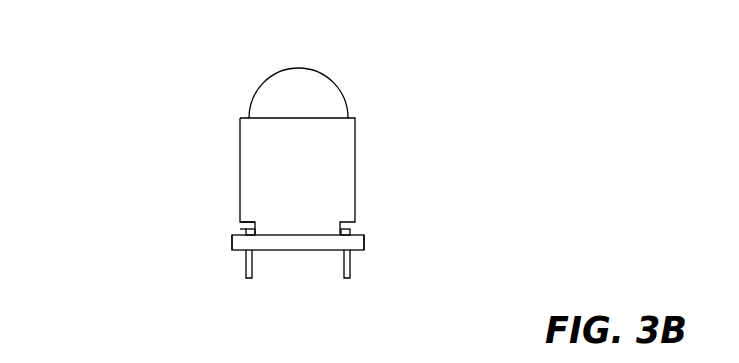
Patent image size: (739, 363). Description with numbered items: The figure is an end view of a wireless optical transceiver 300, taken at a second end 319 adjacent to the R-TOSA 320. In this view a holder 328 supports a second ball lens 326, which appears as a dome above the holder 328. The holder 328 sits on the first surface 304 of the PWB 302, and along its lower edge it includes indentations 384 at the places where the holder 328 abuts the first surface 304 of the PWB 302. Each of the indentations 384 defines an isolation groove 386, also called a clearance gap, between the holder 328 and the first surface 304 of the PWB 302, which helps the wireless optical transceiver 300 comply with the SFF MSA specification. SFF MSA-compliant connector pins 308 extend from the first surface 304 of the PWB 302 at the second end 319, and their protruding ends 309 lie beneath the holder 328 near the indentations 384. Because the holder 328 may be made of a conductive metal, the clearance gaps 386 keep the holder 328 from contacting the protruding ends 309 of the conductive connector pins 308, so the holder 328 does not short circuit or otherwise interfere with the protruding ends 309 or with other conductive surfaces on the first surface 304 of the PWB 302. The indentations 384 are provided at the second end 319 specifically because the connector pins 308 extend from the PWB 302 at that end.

The wireless optical transceiver 300 is at (90, 62).
The R-TOSA 320 is at (340, 62).
The second ball lens 326 is at (262, 92).
The holder 328 is at (351, 114).
The protruding ends 309 is at (254, 230).
The indentations 384 is at (249, 220).
The isolation groove 386 is at (238, 228).
The first surface 304 is at (364, 236).
The second end 319 is at (365, 245).
The PWB 302 is at (238, 245).
The connector pins 308 is at (350, 275).